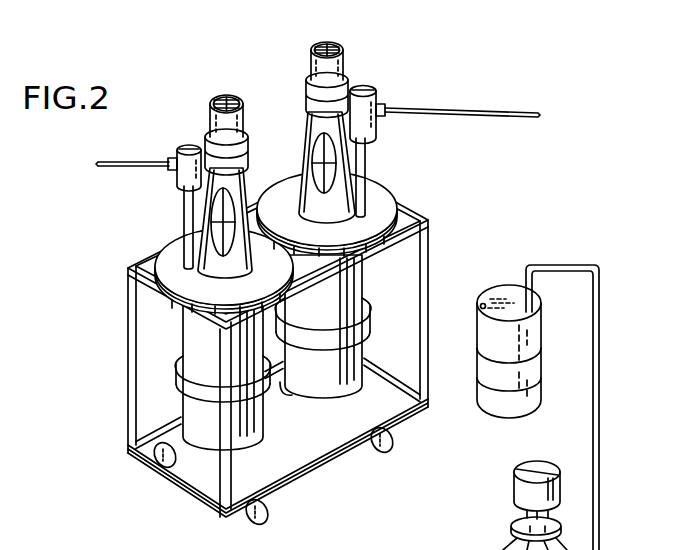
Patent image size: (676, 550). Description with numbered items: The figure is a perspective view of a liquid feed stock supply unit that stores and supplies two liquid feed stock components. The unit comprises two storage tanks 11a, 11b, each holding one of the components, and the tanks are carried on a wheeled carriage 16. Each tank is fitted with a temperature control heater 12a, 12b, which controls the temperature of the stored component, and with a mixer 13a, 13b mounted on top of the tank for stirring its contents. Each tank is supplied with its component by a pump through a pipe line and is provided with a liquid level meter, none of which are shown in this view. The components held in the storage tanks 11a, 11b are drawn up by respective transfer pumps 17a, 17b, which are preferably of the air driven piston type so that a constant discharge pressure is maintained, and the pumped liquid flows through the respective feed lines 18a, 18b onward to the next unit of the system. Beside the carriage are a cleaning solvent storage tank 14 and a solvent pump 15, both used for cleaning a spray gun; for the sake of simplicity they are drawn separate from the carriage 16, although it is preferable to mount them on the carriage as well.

The storage tank 11a is at (172, 252).
The storage tank 11b is at (382, 196).
The temperature control heater 12a is at (178, 378).
The temperature control heater 12b is at (362, 342).
The mixer 13a is at (243, 113).
The mixer 13b is at (342, 52).
The cleaning solvent storage tank 14 is at (514, 288).
The solvent pump 15 is at (524, 468).
The carriage 16 is at (422, 240).
The transfer pump 17a is at (189, 148).
The transfer pump 17b is at (368, 89).
The feed line 18a is at (143, 168).
The feed line 18b is at (476, 114).